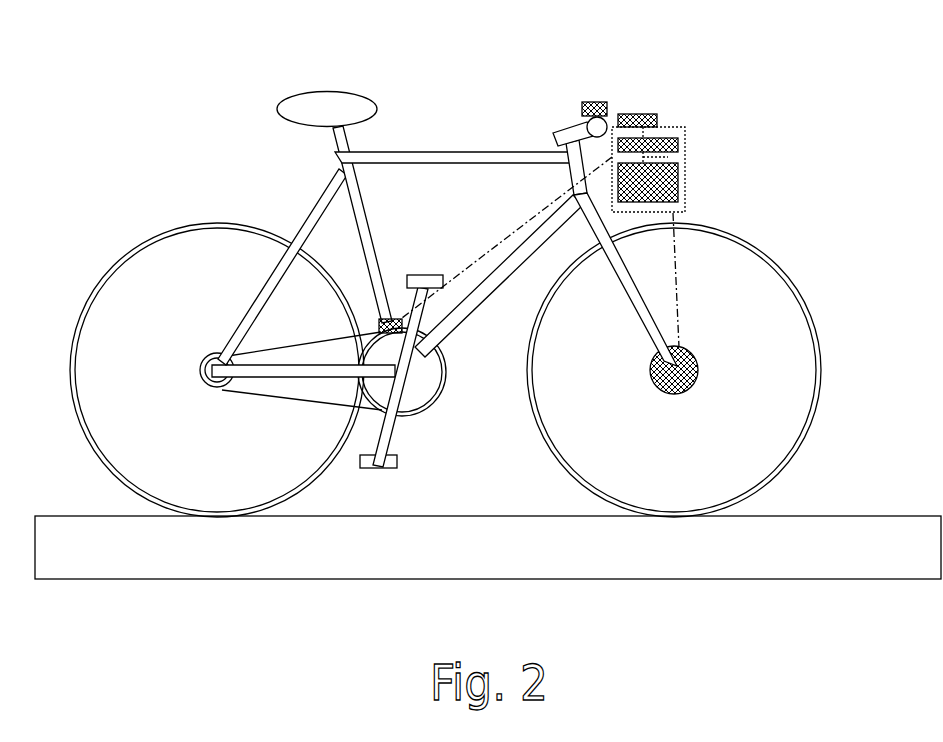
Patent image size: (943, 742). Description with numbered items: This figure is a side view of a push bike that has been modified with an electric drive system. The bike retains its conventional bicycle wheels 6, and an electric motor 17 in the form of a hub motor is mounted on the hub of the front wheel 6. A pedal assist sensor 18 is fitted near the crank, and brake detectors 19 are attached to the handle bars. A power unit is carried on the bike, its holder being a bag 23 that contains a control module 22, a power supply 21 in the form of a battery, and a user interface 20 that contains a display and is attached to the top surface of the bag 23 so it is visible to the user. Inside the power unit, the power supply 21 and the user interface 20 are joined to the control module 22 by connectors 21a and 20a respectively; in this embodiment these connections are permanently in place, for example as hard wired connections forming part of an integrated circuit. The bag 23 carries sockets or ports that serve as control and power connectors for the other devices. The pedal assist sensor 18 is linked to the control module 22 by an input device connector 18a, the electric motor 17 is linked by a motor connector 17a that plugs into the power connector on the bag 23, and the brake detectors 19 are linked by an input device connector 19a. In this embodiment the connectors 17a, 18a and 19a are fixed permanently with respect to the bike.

The bicycle wheel 6 is at (790, 272).
The electric motor 17 is at (693, 397).
The motor connector 17a is at (688, 314).
The pedal assist sensor 18 is at (398, 338).
The input device connector 18a is at (500, 238).
The brake detector 19 is at (596, 100).
The input device connector 19a is at (611, 118).
The user interface 20 is at (662, 110).
The connector 20a is at (651, 134).
The power supply 21 is at (690, 180).
The connector 21a is at (656, 156).
The control module 22 is at (686, 143).
The bag 23 is at (690, 205).